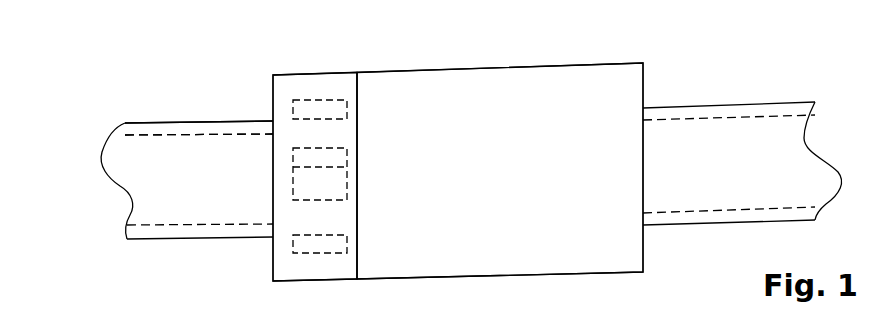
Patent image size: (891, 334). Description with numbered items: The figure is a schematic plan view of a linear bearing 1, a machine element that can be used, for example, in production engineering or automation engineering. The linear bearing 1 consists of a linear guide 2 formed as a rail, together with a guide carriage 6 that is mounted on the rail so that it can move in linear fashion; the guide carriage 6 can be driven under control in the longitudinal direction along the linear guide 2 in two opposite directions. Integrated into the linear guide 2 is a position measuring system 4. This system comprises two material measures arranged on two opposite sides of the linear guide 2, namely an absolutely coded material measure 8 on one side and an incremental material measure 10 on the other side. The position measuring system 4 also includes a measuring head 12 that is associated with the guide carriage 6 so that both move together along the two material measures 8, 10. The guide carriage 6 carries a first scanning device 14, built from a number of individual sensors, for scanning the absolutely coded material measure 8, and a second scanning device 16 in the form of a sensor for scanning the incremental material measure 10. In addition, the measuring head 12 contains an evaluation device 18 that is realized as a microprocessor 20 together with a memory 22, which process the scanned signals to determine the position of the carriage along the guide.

The linear bearing 1 is at (150, 85).
The linear guide 2 is at (725, 145).
The position measuring system 4 is at (298, 60).
The guide carriage 6 is at (609, 80).
The absolutely coded material measure 8 is at (199, 227).
The incremental material measure 10 is at (203, 122).
The measuring head 12 is at (337, 88).
The first scanning device 14 is at (348, 248).
The second scanning device 16 is at (348, 112).
The evaluation device 18 is at (385, 146).
The microprocessor 20 is at (348, 185).
The memory 22 is at (293, 163).